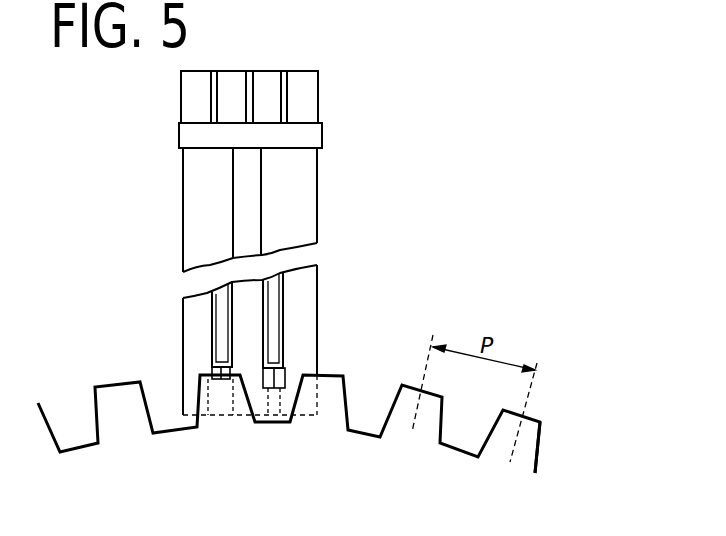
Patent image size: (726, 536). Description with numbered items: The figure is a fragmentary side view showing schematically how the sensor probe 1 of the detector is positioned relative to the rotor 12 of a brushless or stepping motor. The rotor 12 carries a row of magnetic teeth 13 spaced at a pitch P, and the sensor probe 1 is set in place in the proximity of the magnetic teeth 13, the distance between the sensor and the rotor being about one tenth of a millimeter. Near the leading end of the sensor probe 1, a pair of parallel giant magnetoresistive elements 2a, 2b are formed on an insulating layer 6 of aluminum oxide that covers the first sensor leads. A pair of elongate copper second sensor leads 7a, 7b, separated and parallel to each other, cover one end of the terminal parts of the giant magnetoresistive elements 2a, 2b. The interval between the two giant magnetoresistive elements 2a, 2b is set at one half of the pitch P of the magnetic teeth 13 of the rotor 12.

The sensor probe 1 is at (318, 217).
The insulating layer 6 is at (285, 303).
The second sensor lead 7a is at (270, 330).
The second sensor lead 7b is at (222, 323).
The giant magnetoresistive element 2a is at (276, 383).
The giant magnetoresistive element 2b is at (223, 392).
The rotor 12 is at (555, 428).
The magnetic teeth 13 is at (532, 450).